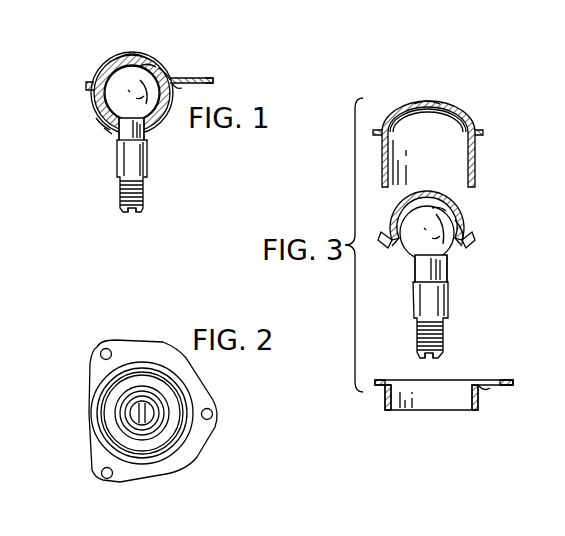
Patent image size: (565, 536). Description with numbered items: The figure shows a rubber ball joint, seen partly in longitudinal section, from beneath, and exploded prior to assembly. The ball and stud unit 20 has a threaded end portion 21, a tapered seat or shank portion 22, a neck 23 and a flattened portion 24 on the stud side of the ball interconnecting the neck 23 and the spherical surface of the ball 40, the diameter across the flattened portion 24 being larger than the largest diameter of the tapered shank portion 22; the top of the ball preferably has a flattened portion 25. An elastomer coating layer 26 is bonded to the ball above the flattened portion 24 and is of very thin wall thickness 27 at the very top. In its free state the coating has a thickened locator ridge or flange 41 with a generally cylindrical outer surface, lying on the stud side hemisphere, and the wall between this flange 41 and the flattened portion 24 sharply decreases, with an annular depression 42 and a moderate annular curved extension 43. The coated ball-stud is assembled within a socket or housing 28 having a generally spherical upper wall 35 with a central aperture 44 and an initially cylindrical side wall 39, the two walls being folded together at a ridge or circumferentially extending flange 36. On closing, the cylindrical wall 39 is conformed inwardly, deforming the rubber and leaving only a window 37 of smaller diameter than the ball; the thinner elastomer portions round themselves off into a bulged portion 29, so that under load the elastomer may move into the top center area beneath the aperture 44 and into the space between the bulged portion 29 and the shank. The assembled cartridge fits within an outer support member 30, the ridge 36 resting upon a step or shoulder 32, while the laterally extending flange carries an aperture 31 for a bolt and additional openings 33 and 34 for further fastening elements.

In FIG. 1, the ball and stud unit 20 is at (149, 168).
In FIG. 2, the ball and stud unit 20 is at (157, 424).
In FIG. 3, the ball and stud unit 20 is at (451, 301).
In FIG. 1, the threaded end portion 21 is at (142, 204).
In FIG. 2, the threaded end portion 21 is at (148, 425).
In FIG. 3, the threaded end portion 21 is at (444, 346).
In FIG. 1, the tapered seat or shank portion 22 is at (123, 135).
In FIG. 2, the tapered seat or shank portion 22 is at (160, 403).
In FIG. 3, the tapered seat or shank portion 22 is at (415, 308).
In FIG. 1, the neck 23 is at (120, 130).
In FIG. 3, the neck 23 is at (413, 272).
In FIG. 1, the flattened portion 24 is at (147, 130).
In FIG. 2, the flattened portion 24 is at (142, 428).
In FIG. 3, the flattened portion 24 is at (448, 257).
In FIG. 1, the flattened portion at top of ball 25 is at (141, 65).
In FIG. 3, the flattened portion at top of ball 25 is at (431, 207).
In FIG. 1, the elastomer coating layer 26 is at (162, 66).
In FIG. 3, the elastomer coating layer 26 is at (395, 221).
In FIG. 1, the thin wall portion of covering 27 is at (134, 66).
In FIG. 3, the thin wall portion of covering 27 is at (425, 206).
In FIG. 1, the socket or housing 28 is at (172, 68).
In FIG. 2, the socket or housing 28 is at (110, 412).
In FIG. 3, the socket or housing 28 is at (469, 116).
In FIG. 1, the bulged portion 29 is at (100, 124).
In FIG. 1, the support member 30 is at (214, 80).
In FIG. 2, the support member 30 is at (157, 347).
In FIG. 3, the support member 30 is at (489, 379).
In FIG. 1, the aperture 31 is at (202, 78).
In FIG. 2, the aperture 31 is at (213, 414).
In FIG. 3, the aperture 31 is at (515, 384).
In FIG. 1, the step or shoulder 32 is at (187, 86).
In FIG. 2, the step or shoulder 32 is at (175, 343).
In FIG. 3, the step or shoulder 32 is at (487, 391).
In FIG. 2, the additional opening 33 is at (101, 475).
In FIG. 2, the additional opening 34 is at (106, 348).
In FIG. 1, the spherical upper wall 35 is at (113, 58).
In FIG. 3, the spherical upper wall 35 is at (416, 104).
In FIG. 1, the ridge or circumferentially extending flange 36 is at (87, 82).
In FIG. 3, the ridge or circumferentially extending flange 36 is at (378, 129).
In FIG. 1, the window 37 is at (110, 130).
In FIG. 2, the window 37 is at (120, 398).
In FIG. 3, the cylindrical side wall 39 is at (475, 168).
In FIG. 3, the ball 40 is at (457, 228).
In FIG. 3, the locator ridge or flange 41 is at (472, 236).
In FIG. 3, the annular depression 42 is at (458, 247).
In FIG. 3, the annular curved extension 43 is at (390, 252).
In FIG. 1, the aperture 44 is at (131, 62).
In FIG. 3, the aperture 44 is at (428, 101).